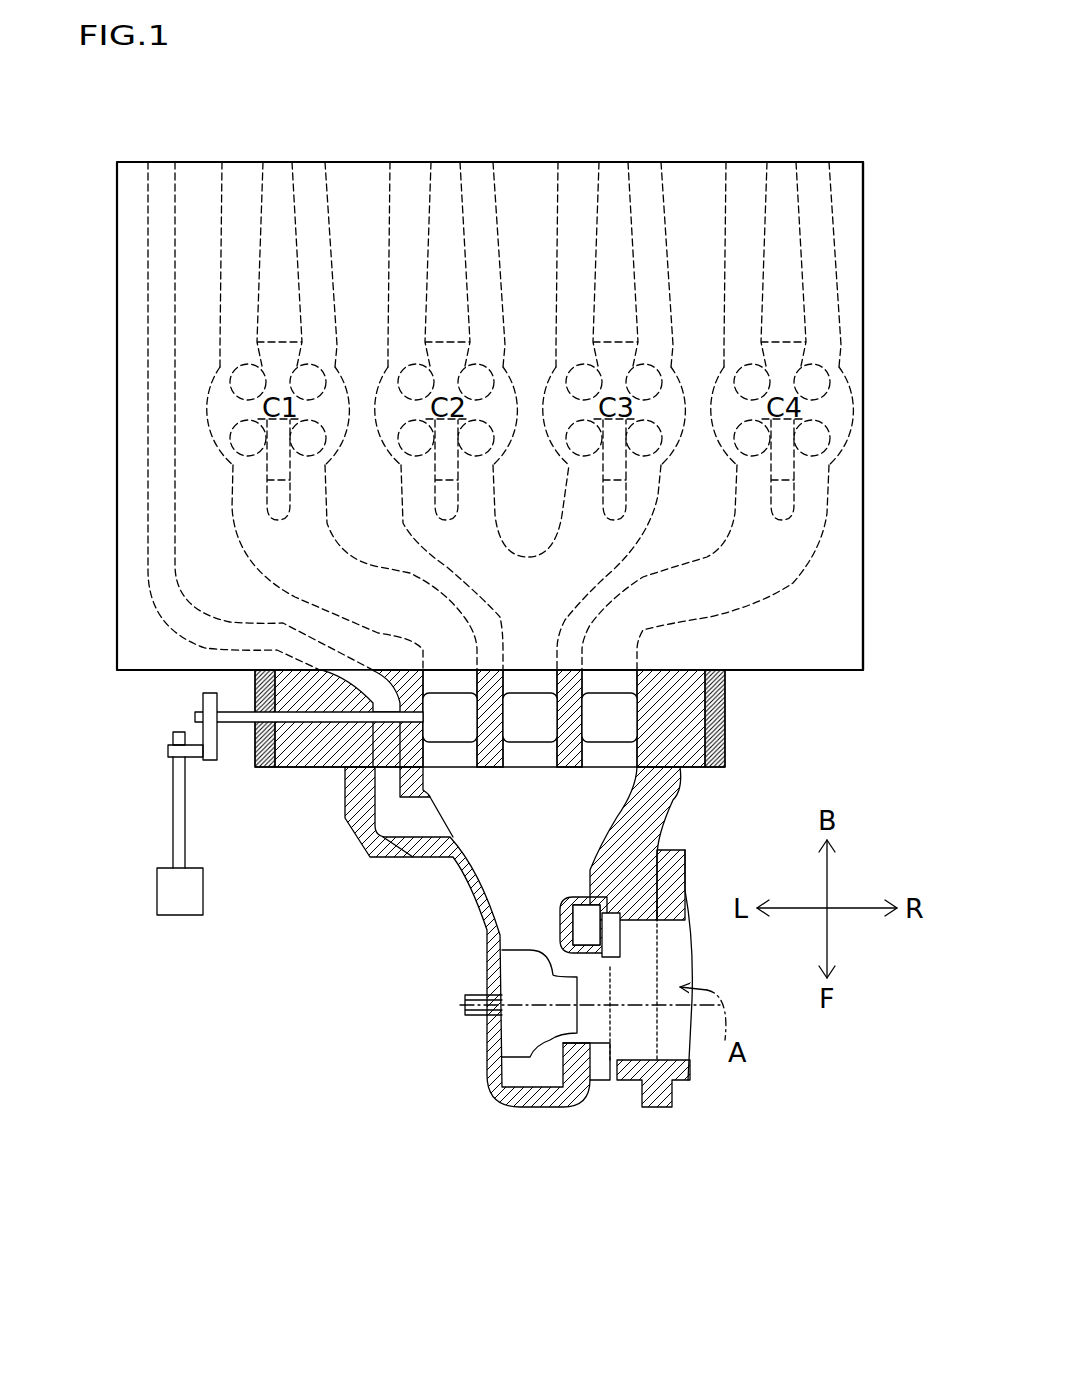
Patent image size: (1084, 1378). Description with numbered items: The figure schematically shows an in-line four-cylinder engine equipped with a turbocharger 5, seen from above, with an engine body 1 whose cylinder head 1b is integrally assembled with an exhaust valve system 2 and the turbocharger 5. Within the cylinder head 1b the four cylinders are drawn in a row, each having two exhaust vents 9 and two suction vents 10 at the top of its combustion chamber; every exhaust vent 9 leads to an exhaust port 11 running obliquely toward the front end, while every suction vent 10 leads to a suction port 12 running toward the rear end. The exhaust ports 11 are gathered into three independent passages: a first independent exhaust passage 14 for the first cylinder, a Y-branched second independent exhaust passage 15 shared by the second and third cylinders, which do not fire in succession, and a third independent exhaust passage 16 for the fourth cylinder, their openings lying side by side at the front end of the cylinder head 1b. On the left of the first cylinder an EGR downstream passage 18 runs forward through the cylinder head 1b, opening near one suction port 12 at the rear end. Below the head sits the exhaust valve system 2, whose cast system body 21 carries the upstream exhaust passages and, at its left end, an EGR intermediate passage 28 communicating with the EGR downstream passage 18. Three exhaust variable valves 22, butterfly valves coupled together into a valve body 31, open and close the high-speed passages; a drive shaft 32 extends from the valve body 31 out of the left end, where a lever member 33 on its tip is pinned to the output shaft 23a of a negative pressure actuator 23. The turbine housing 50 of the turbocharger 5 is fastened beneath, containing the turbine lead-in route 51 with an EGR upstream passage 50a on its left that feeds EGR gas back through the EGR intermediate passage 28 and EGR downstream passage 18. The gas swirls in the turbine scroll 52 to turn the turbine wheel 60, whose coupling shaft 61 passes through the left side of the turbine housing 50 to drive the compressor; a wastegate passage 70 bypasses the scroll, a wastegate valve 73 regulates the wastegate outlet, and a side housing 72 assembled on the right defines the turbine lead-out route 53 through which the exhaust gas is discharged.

The engine body 1 is at (872, 474).
The cylinder head 1b is at (863, 290).
The exhaust valve system 2 is at (728, 739).
The turbocharger 5 is at (471, 1072).
The exhaust vent 9 is at (246, 448).
The suction vent 10 is at (320, 376).
The exhaust port 11 is at (309, 479).
The suction port 12 is at (222, 192).
The first independent exhaust passage 14 is at (275, 546).
The second independent exhaust passage 15 is at (572, 580).
The third independent exhaust passage 16 is at (762, 575).
The EGR downstream passage 18 is at (146, 531).
The system body 21 is at (290, 769).
The exhaust variable valves 22 is at (450, 700).
The negative pressure actuator 23 is at (160, 896).
The output shaft 23a is at (172, 820).
The EGR intermediate passage 28 is at (385, 777).
The valve body 31 is at (650, 726).
The drive shaft 32 is at (338, 727).
The lever member 33 is at (213, 762).
The turbine housing 50 is at (481, 902).
The EGR upstream passage 50a is at (428, 820).
The turbine lead-in route 51 is at (560, 831).
The turbine scroll 52 is at (526, 1108).
The turbine lead-out route 53 is at (700, 985).
The turbine wheel 60 is at (540, 1040).
The coupling shaft 61 is at (465, 1003).
The wastegate passage 70 is at (596, 892).
The side housing 72 is at (674, 1098).
The wastegate valve 73 is at (622, 936).